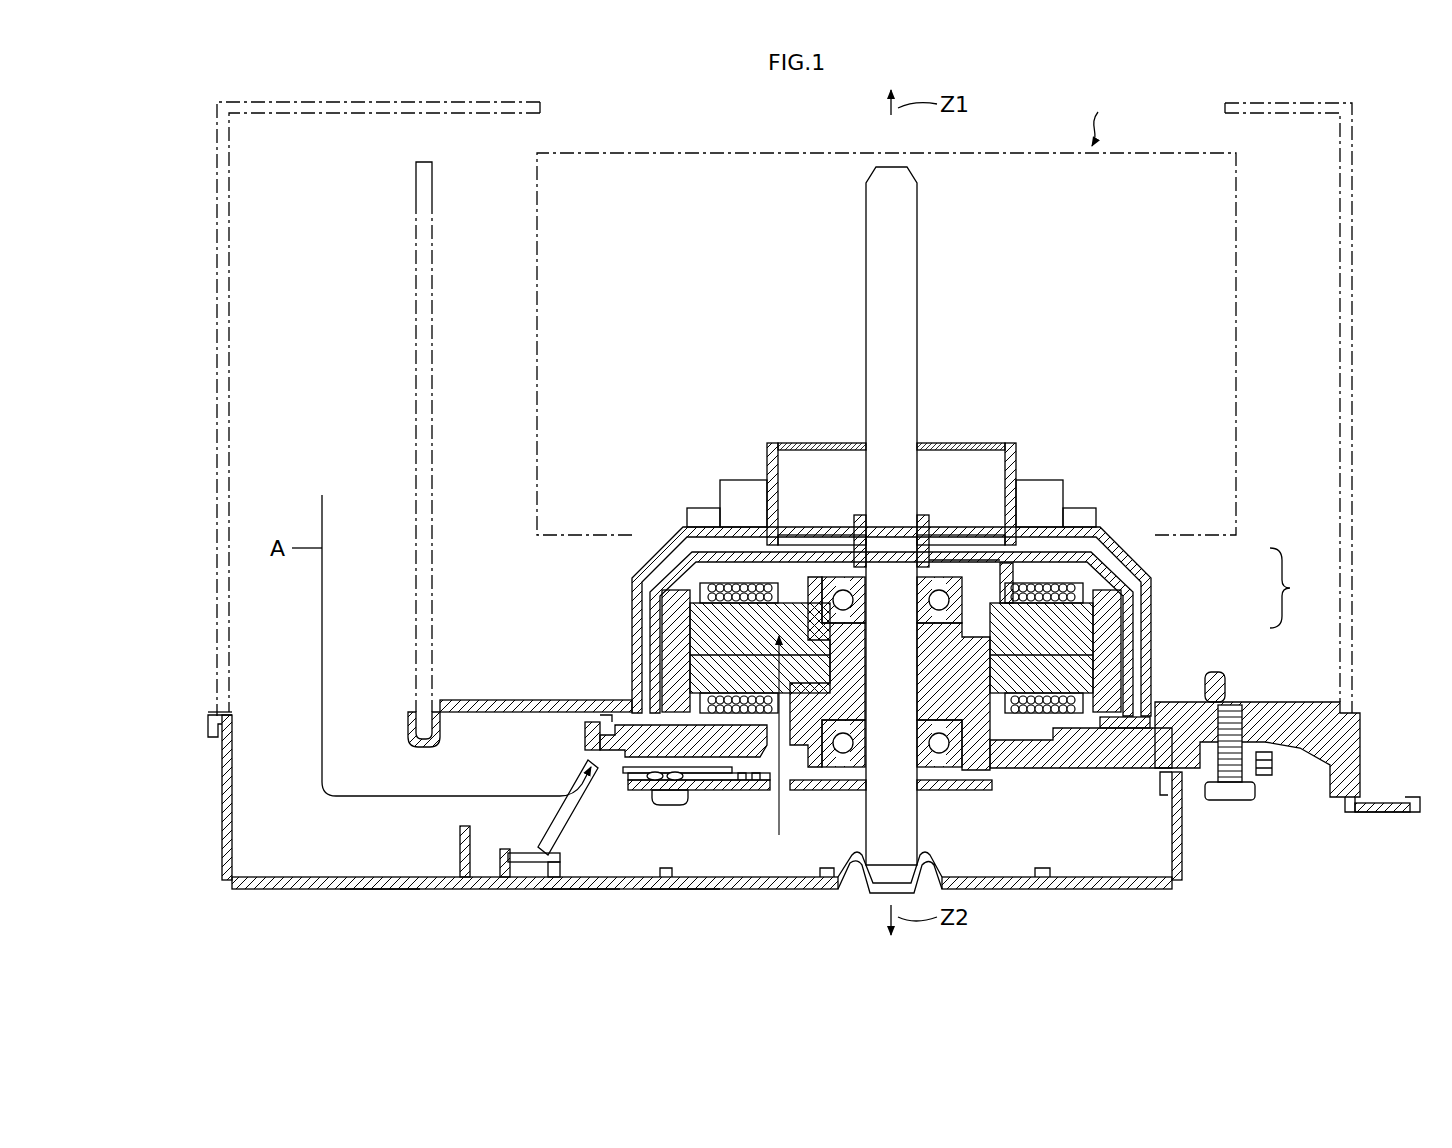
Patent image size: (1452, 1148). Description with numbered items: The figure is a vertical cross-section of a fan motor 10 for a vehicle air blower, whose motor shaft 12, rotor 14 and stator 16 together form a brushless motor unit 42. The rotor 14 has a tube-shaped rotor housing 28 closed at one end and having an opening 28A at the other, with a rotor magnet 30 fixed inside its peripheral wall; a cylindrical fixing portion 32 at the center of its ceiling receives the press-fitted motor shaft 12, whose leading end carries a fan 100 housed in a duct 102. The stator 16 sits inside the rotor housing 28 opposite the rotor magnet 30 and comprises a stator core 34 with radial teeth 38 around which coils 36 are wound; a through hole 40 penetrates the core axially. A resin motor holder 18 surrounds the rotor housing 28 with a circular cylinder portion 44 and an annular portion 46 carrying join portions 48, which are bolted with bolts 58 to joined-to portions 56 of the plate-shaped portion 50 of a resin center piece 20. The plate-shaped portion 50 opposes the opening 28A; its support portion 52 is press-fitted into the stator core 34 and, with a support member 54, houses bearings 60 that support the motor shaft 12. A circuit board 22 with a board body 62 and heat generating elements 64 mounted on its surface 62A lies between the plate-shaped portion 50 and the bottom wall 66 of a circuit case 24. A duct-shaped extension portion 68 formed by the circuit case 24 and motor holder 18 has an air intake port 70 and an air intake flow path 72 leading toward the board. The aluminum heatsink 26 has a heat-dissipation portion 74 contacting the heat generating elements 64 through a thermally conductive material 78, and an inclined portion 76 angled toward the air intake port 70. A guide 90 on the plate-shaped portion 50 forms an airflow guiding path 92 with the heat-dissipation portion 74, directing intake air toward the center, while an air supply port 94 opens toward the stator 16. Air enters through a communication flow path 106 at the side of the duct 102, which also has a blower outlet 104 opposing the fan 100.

The fan motor 10 is at (1092, 113).
The motor shaft 12 is at (917, 398).
The rotor 14 is at (1160, 622).
The stator 16 is at (1152, 584).
The motor holder 18 is at (648, 548).
The center piece 20 is at (1105, 772).
The circuit board 22 is at (812, 792).
The circuit case 24 is at (582, 890).
The heatsink 26 is at (585, 828).
The rotor housing 28 is at (1137, 602).
The opening 28A is at (650, 722).
The rotor magnet 30 is at (1150, 622).
The fixing portion 32 is at (932, 520).
The stator core 34 is at (1110, 612).
The coils 36 is at (1085, 612).
The teeth 38 is at (1112, 676).
The through hole 40 is at (1012, 600).
The motor unit 42 is at (1297, 588).
The circular cylinder portion 44 is at (633, 580).
The annular portion 46 is at (505, 700).
The join portions 48 is at (1232, 672).
The plate-shaped portion 50 is at (1056, 768).
The support portion 52 is at (1000, 770).
The support member 54 is at (1000, 590).
The joined-to portions 56 is at (1272, 775).
The bolts 58 is at (1238, 802).
The bearings 60 is at (830, 572).
The board body 62 is at (765, 790).
The surface 62A is at (745, 780).
The heat generating elements 64 is at (720, 790).
The bottom wall 66 is at (670, 890).
The extension portion 68 is at (382, 890).
The air intake port 70 is at (258, 712).
The air intake flow path 72 is at (300, 860).
The heat-dissipation portion 74 is at (650, 773).
The inclined portion 76 is at (565, 827).
The thermally conductive material 78 is at (685, 802).
The guide 90 is at (673, 662).
The airflow guiding path 92 is at (668, 781).
The air supply port 94 is at (835, 718).
The fan 100 is at (780, 150).
The duct 102 is at (1352, 250).
The blower outlet 104 is at (545, 108).
The communication flow path 106 is at (258, 308).